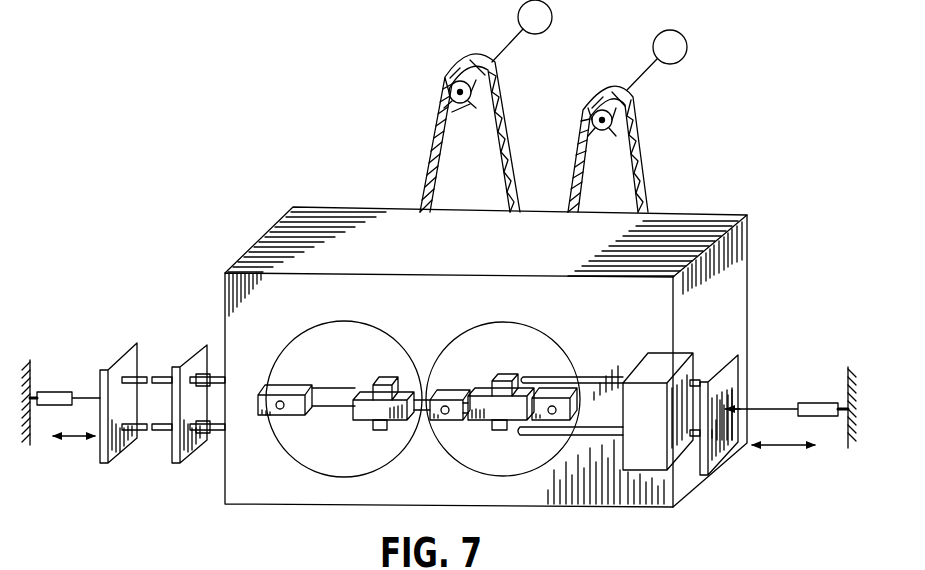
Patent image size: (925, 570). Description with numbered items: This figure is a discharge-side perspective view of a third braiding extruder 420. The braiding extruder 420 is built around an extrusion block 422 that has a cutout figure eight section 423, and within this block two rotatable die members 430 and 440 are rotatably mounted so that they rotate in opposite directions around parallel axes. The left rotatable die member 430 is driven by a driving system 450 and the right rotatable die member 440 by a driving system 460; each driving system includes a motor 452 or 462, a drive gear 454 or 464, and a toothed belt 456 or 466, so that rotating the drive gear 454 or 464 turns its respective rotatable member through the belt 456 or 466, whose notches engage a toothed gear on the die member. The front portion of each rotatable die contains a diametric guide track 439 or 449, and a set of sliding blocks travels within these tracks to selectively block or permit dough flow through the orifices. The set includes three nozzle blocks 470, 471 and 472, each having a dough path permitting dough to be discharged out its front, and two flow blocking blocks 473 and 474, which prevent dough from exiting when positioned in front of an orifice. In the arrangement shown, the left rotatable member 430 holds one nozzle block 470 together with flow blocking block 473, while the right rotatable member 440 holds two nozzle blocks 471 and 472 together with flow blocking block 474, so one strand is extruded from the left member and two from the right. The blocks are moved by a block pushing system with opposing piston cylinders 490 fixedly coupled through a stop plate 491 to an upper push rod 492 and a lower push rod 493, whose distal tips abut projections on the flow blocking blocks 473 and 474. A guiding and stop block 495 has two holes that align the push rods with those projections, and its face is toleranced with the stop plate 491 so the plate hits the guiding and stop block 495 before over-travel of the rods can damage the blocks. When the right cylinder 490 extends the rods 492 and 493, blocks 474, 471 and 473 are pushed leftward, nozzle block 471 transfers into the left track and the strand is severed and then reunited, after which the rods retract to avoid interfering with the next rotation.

The braiding extruder 420 is at (268, 163).
The extrusion block 422 is at (658, 500).
The cutout figure eight section 423 is at (540, 472).
The rotatable die member 430 is at (363, 337).
The diametric guide track 439 is at (334, 392).
The rotatable die member 440 is at (503, 333).
The diametric guide track 449 is at (476, 393).
The driving system 450 is at (442, 52).
The motor 452 is at (552, 17).
The drive gear 454 is at (480, 127).
The toothed belt 456 is at (436, 128).
The driving system 460 is at (706, 135).
The motor 462 is at (680, 32).
The drive gear 464 is at (624, 152).
The toothed belt 466 is at (641, 193).
The nozzle block 470 is at (265, 413).
The nozzle block 471 is at (437, 437).
The nozzle block 472 is at (585, 374).
The flow blocking block 473 is at (364, 424).
The flow blocking block 474 is at (508, 444).
The piston cylinder 490 is at (52, 392).
The stop plate 491 is at (116, 358).
The upper push rod 492 is at (230, 378).
The lower push rod 493 is at (657, 470).
The guiding and stop block 495 is at (205, 345).